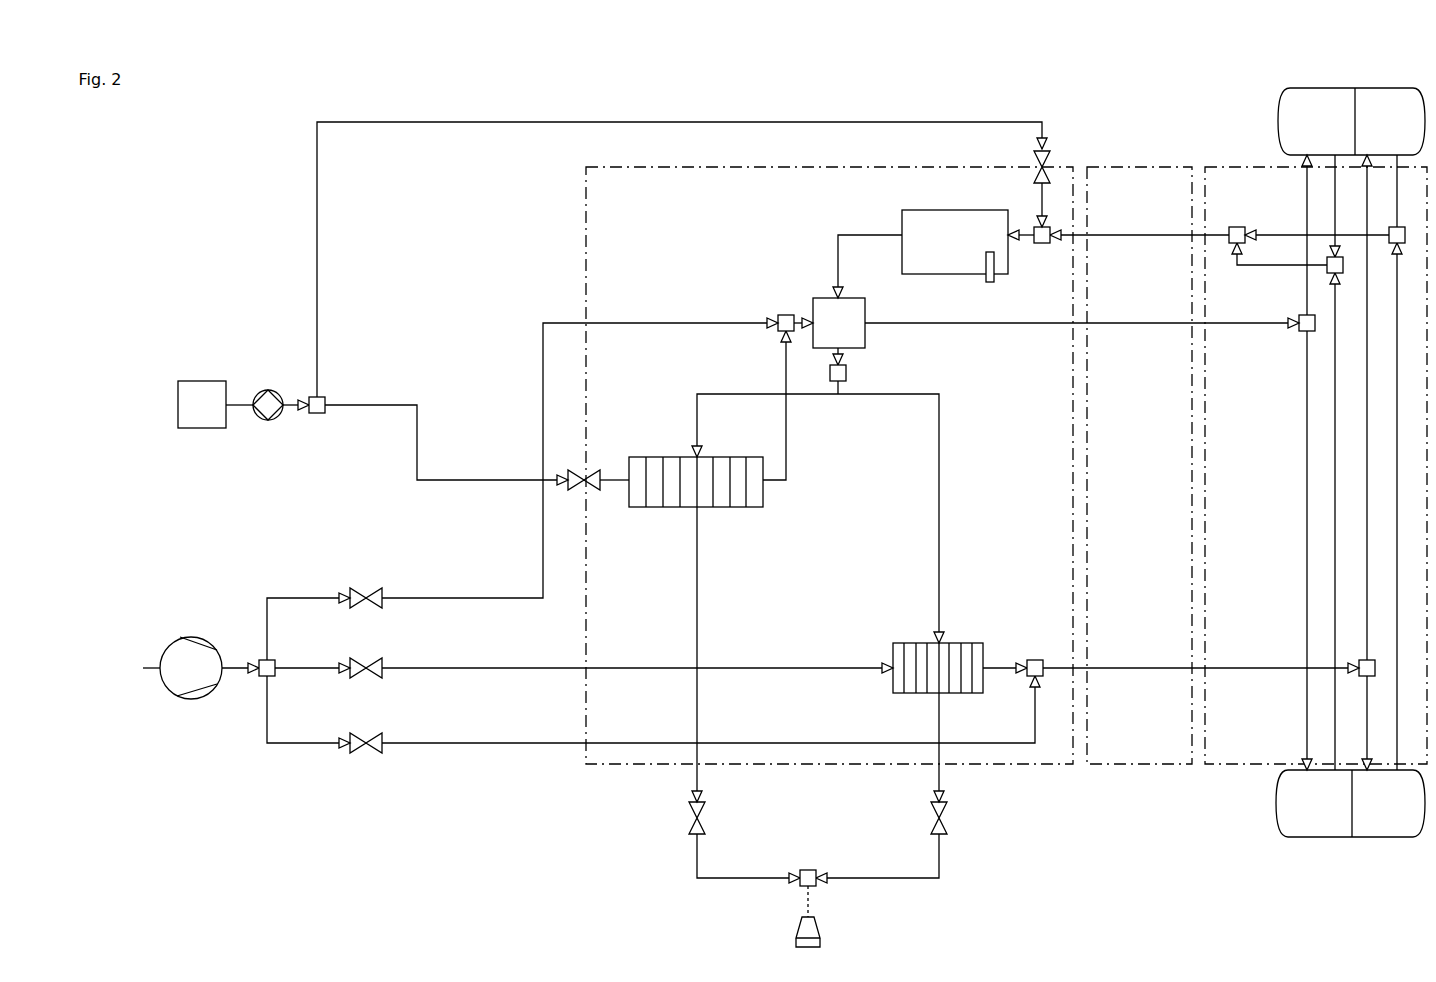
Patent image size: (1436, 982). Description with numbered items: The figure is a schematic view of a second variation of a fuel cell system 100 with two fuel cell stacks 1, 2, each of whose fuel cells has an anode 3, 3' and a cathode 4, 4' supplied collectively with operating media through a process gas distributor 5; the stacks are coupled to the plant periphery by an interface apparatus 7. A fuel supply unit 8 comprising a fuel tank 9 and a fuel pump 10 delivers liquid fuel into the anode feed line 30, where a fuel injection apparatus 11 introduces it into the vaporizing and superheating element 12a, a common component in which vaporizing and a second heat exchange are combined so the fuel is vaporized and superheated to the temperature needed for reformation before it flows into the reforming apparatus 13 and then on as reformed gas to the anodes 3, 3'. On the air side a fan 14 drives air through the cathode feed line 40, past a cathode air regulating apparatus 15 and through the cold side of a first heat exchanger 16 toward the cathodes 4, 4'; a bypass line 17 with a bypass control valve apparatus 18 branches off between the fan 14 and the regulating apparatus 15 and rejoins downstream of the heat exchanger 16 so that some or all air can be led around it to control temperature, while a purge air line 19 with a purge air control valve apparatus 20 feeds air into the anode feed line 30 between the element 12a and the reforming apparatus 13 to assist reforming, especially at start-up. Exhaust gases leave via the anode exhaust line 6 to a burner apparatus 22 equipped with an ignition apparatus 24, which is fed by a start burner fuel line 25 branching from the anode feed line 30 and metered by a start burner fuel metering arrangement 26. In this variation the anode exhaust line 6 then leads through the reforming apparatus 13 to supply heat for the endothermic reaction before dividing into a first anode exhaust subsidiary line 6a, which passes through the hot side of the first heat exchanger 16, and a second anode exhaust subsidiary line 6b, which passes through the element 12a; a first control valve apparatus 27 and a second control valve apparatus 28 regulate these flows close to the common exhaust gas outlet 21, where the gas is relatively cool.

The fuel cell stack 1 is at (1351, 91).
The fuel cell stack 2 is at (1350, 826).
The anode 3 is at (1313, 118).
The cathode 4 is at (1381, 118).
The anode 3' is at (1313, 800).
The cathode 4' is at (1380, 800).
The process gas distributor 5 is at (1245, 766).
The anode exhaust line 6 is at (1144, 237).
The first anode exhaust subsidiary line 6a is at (942, 510).
The second anode exhaust subsidiary line 6b is at (700, 646).
The interface apparatus 7 is at (1150, 766).
The fuel supply unit 8 is at (362, 356).
The fuel tank 9 is at (202, 404).
The fuel pump 10 is at (268, 420).
The fuel injection apparatus 11 is at (586, 478).
The vaporizing and superheating element 12a is at (748, 508).
The reforming apparatus 13 is at (839, 323).
The fan 14 is at (197, 635).
The cathode air regulating apparatus 15 is at (364, 665).
The first heat exchanger 16 is at (972, 642).
The bypass line 17 is at (485, 747).
The bypass control valve apparatus 18 is at (358, 750).
The purge air line 19 is at (468, 596).
The purge air control valve apparatus 20 is at (370, 594).
The exhaust gas outlet 21 is at (820, 926).
The burner apparatus 22 is at (955, 242).
The ignition apparatus 24 is at (995, 280).
The start burner fuel line 25 is at (785, 120).
The start burner fuel metering arrangement 26 is at (1050, 166).
The first control valve apparatus 27 is at (942, 818).
The second control valve apparatus 28 is at (700, 818).
The anode feed line 30 is at (1033, 326).
The cathode feed line 40 is at (483, 670).
The fuel cell system 100 is at (362, 840).